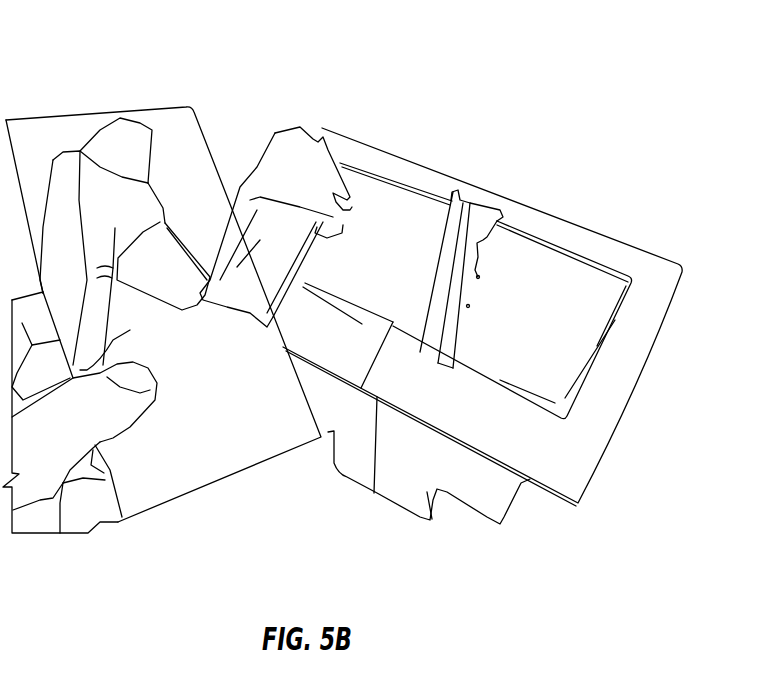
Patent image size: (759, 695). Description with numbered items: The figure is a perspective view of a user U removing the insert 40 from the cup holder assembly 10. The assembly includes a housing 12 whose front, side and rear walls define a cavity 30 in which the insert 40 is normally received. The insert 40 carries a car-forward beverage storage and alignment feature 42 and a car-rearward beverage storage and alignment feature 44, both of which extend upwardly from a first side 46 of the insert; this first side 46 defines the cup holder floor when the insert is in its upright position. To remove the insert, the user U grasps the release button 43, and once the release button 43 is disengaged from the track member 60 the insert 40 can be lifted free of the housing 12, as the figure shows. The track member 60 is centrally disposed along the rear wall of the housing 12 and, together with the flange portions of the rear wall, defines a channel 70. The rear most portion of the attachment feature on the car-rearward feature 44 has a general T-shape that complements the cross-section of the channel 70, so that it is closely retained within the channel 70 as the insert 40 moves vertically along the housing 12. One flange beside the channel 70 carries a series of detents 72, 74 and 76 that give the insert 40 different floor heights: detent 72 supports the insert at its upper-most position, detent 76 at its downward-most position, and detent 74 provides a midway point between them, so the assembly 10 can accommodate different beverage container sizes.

The cup holder assembly 10 is at (538, 116).
The housing 12 is at (556, 207).
The cavity 30 is at (577, 312).
The insert 40 is at (195, 95).
The car-forward beverage storage and alignment feature 42 is at (98, 186).
The release button 43 is at (340, 233).
The car-rearward beverage storage and alignment feature 44 is at (288, 150).
The first side 46 is at (226, 404).
The track member 60 is at (467, 206).
The channel 70 is at (477, 223).
The detent 72 is at (487, 240).
The detent 74 is at (478, 277).
The detent 76 is at (468, 306).
The user U is at (98, 418).